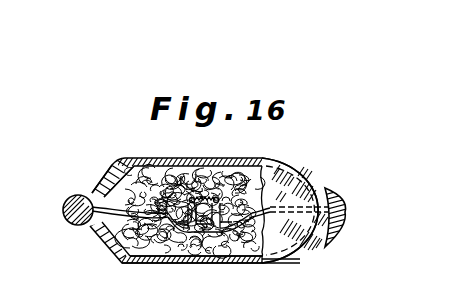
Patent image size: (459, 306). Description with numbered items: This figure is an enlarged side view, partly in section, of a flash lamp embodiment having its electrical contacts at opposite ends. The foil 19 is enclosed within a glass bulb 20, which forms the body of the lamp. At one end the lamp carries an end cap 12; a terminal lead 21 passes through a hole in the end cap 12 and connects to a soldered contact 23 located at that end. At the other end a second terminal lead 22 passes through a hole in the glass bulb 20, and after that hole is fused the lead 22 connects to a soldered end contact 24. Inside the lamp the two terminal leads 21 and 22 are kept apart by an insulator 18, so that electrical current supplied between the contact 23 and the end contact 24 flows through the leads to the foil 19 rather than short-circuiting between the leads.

The end cap 12 is at (100, 238).
The insulator 18 is at (207, 225).
The foil 19 is at (206, 263).
The glass bulb 20 is at (277, 264).
The terminal lead 21 is at (114, 183).
The terminal lead 22 is at (321, 170).
The soldered contact 23 is at (65, 206).
The soldered end contact 24 is at (347, 212).